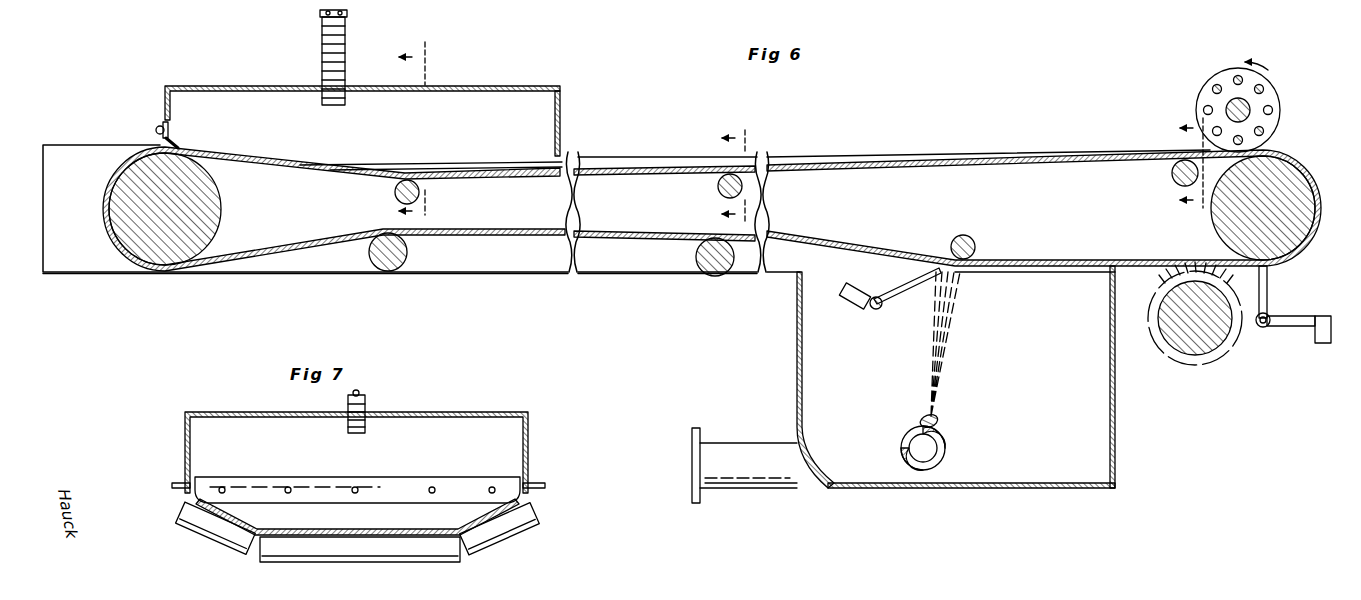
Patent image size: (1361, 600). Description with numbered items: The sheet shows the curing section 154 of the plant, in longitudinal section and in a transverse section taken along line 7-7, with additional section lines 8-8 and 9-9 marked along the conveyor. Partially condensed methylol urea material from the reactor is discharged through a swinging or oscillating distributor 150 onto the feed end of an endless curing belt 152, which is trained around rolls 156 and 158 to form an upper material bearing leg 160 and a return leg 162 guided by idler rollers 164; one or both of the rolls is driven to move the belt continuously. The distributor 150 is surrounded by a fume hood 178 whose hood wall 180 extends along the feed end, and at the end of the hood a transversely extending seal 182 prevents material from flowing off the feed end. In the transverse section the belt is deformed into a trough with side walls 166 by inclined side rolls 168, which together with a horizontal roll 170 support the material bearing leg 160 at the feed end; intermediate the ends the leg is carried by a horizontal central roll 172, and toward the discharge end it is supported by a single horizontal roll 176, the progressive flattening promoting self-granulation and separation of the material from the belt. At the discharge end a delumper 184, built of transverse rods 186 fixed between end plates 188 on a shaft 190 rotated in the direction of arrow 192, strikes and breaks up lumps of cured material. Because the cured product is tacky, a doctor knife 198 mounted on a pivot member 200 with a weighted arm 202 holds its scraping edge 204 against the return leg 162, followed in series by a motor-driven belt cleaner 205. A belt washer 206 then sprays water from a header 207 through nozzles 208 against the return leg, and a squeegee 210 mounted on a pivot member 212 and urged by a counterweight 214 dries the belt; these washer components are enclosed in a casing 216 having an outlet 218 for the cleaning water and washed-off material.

In FIG. 6, the distributor 150 is at (322, 36).
In FIG. 7, the distributor 150 is at (368, 402).
In FIG. 6, the endless curing belt 152 is at (1042, 160).
In FIG. 6, the curing section 154 is at (852, 142).
In FIG. 6, the roll 156 is at (118, 205).
In FIG. 6, the roll 158 is at (1228, 232).
In FIG. 6, the material bearing leg 160 is at (660, 175).
In FIG. 6, the return leg 162 is at (638, 242).
In FIG. 6, the idler rollers 164 is at (385, 268).
In FIG. 7, the side walls 166 is at (237, 514).
In FIG. 7, the inclined side rolls 168 is at (180, 516).
In FIG. 6, the horizontal roll 170 is at (395, 198).
In FIG. 7, the horizontal roll 170 is at (365, 563).
In FIG. 6, the horizontal central roll 172 is at (717, 187).
In FIG. 6, the horizontal roll 176 is at (1170, 176).
In FIG. 6, the fume hood 178 is at (208, 84).
In FIG. 6, the hood wall 180 is at (500, 100).
In FIG. 6, the seal 182 is at (155, 140).
In FIG. 7, the seal 182 is at (330, 477).
In FIG. 6, the delumper 184 is at (1216, 70).
In FIG. 6, the rods 186 is at (1205, 108).
In FIG. 6, the end plates 188 is at (1272, 121).
In FIG. 6, the shaft 190 is at (1250, 110).
In FIG. 6, the arrow 192 is at (1264, 63).
In FIG. 6, the doctor knife 198 is at (1268, 333).
In FIG. 6, the pivot member 200 is at (1270, 318).
In FIG. 6, the weighted arm 202 is at (1322, 340).
In FIG. 6, the scraping edge 204 is at (1270, 272).
In FIG. 6, the belt cleaner 205 is at (1207, 366).
In FIG. 6, the belt washer 206 is at (793, 345).
In FIG. 6, the header 207 is at (947, 440).
In FIG. 6, the nozzles 208 is at (921, 416).
In FIG. 6, the squeegee 210 is at (884, 304).
In FIG. 6, the pivot member 212 is at (870, 312).
In FIG. 6, the counterweight 214 is at (877, 266).
In FIG. 6, the casing 216 is at (918, 492).
In FIG. 6, the outlet 218 is at (716, 494).
In FIG. 6, the section line 7- 7 is at (420, 132).
In FIG. 6, the section line 8- 8 is at (724, 177).
In FIG. 6, the section line 9- 9 is at (1182, 164).